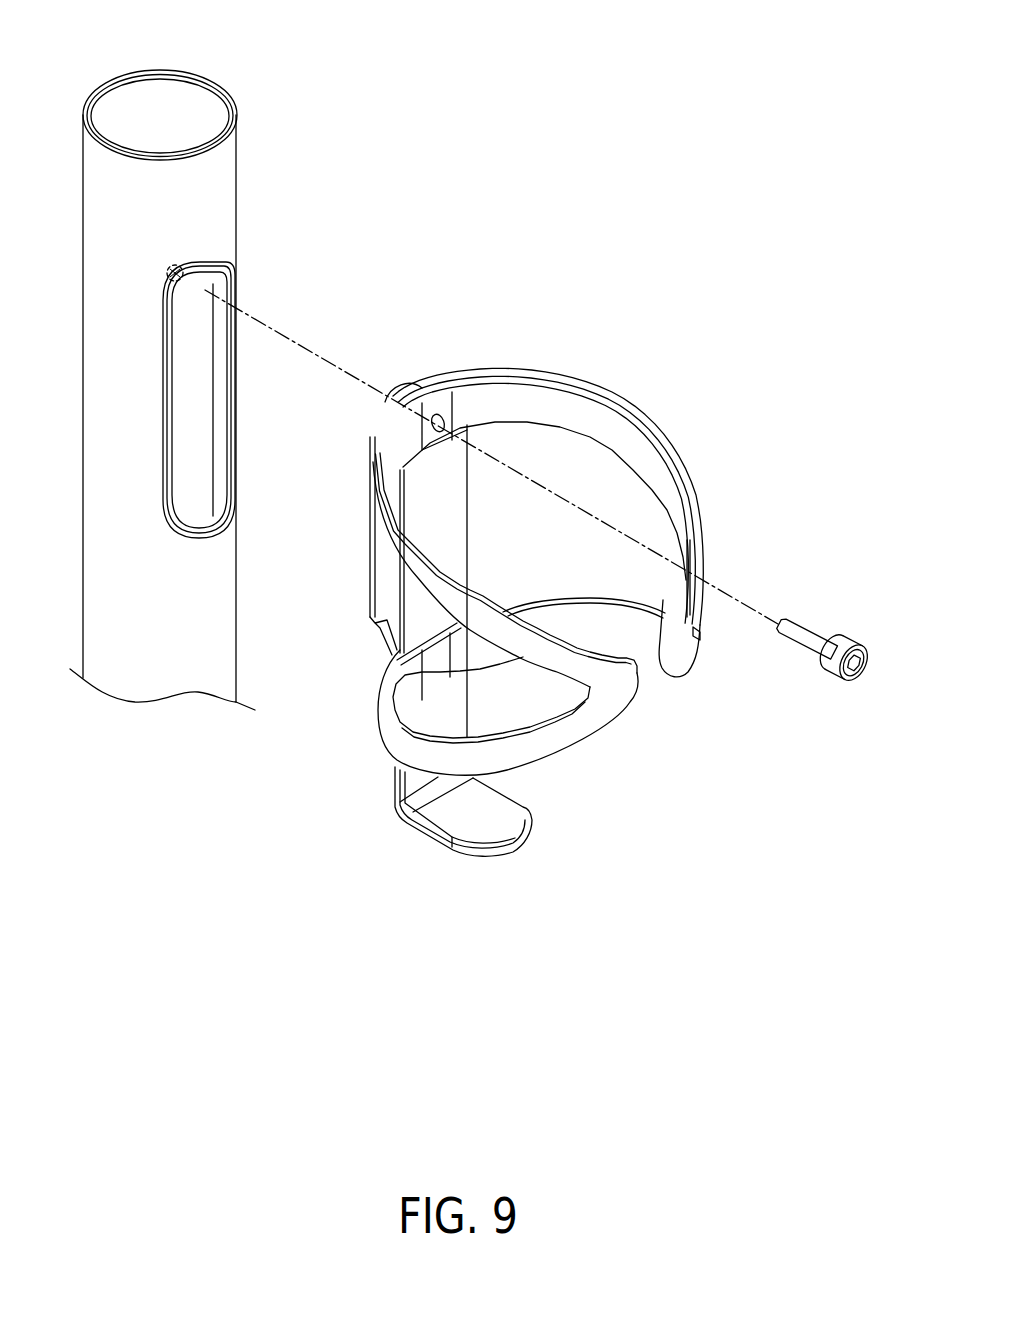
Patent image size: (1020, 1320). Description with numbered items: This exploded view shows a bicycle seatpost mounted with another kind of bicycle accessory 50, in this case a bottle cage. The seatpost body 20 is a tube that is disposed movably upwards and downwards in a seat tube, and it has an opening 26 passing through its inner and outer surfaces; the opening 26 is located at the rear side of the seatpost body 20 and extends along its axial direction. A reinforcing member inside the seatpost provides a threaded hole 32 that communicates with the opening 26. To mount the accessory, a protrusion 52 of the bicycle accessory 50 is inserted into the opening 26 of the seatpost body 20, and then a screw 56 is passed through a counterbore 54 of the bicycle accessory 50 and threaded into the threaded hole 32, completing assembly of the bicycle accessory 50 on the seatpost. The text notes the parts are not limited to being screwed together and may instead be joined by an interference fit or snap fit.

The seatpost body 20 is at (246, 72).
The opening 26 is at (220, 420).
The threaded hole 32 is at (187, 263).
The bicycle accessory 50 is at (536, 577).
The protrusion 52 is at (408, 390).
The counterbore 54 is at (447, 418).
The screw 56 is at (805, 632).